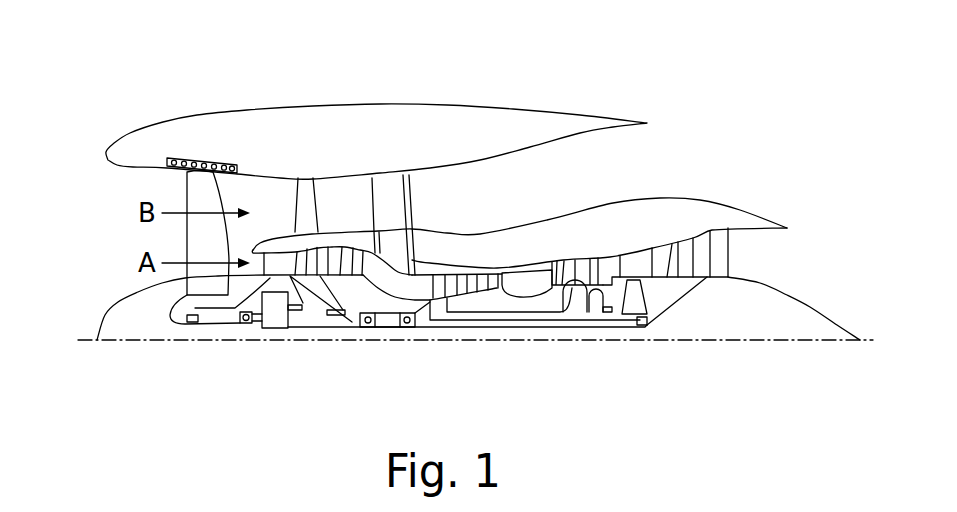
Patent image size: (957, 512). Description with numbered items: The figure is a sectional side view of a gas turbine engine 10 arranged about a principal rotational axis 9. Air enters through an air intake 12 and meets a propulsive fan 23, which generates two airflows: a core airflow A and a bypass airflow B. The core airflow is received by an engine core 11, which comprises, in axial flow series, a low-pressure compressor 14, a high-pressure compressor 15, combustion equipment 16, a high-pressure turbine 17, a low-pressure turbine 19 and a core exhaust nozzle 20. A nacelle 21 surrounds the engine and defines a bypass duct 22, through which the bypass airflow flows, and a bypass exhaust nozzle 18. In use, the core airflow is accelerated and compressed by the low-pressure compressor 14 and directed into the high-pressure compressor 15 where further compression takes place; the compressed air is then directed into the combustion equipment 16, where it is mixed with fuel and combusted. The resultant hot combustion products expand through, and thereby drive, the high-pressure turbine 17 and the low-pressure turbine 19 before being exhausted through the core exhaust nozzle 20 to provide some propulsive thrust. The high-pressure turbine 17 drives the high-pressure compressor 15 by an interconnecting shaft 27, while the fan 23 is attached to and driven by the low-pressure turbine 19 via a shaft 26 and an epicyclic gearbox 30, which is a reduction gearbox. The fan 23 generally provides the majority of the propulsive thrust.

The principal rotational axis 9 is at (755, 341).
The gas turbine engine 10 is at (363, 94).
The engine core 11 is at (545, 247).
The air intake 12 is at (192, 238).
The low-pressure compressor 14 is at (338, 260).
The high-pressure compressor 15 is at (467, 283).
The combustion equipment 16 is at (530, 287).
The high-pressure turbine 17 is at (580, 263).
The bypass exhaust nozzle 18 is at (741, 120).
The low-pressure turbine 19 is at (707, 265).
The core exhaust nozzle 20 is at (792, 262).
The nacelle 21 is at (388, 118).
The bypass duct 22 is at (624, 163).
The propulsive fan 23 is at (192, 248).
The shaft 26 is at (432, 328).
The interconnecting shaft 27 is at (492, 320).
The epicyclic gearbox 30 is at (274, 318).